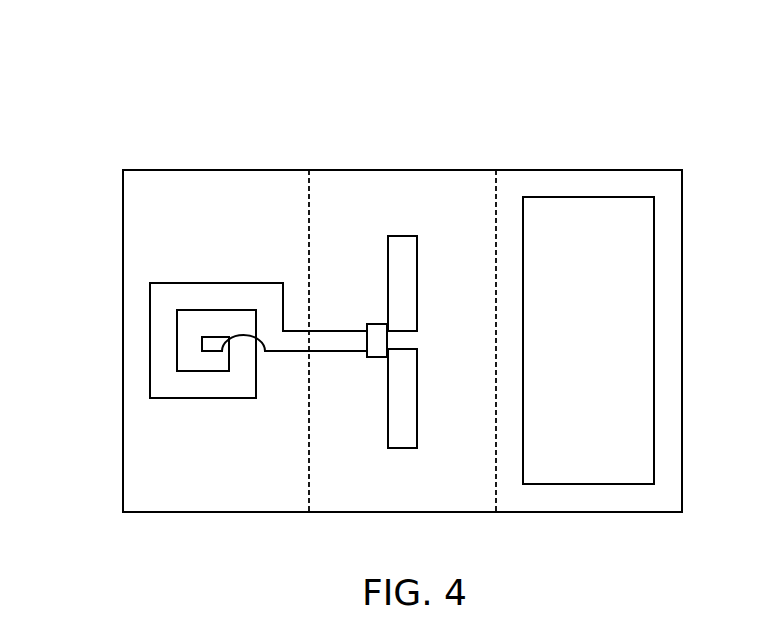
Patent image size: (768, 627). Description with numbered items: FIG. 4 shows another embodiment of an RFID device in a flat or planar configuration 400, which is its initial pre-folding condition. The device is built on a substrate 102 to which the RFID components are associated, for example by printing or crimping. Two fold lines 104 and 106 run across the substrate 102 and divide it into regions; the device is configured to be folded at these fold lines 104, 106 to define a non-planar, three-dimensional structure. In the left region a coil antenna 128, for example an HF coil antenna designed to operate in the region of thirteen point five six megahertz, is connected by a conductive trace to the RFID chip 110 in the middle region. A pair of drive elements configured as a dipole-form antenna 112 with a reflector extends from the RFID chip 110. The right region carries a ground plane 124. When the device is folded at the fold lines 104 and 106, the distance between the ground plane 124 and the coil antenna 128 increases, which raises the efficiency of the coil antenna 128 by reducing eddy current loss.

The flat or planar configuration 400 is at (93, 138).
The substrate 102 is at (205, 502).
The fold line 104 is at (310, 188).
The fold line 106 is at (497, 188).
The RFID chip 110 is at (377, 324).
The dipole-form antenna 112 is at (417, 400).
The ground plane 124 is at (654, 229).
The coil antenna 128 is at (203, 398).